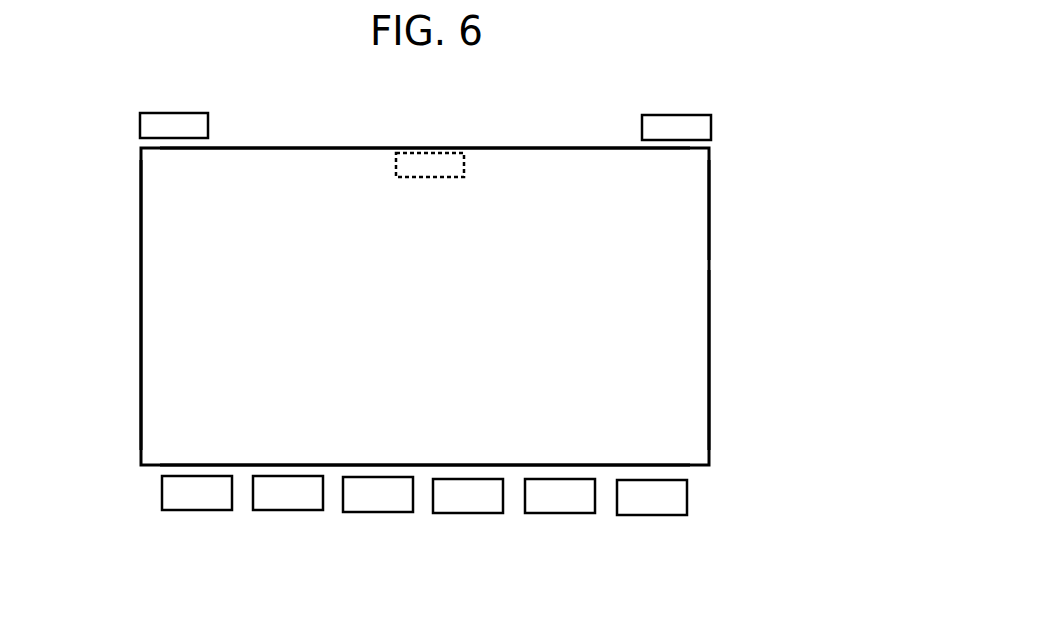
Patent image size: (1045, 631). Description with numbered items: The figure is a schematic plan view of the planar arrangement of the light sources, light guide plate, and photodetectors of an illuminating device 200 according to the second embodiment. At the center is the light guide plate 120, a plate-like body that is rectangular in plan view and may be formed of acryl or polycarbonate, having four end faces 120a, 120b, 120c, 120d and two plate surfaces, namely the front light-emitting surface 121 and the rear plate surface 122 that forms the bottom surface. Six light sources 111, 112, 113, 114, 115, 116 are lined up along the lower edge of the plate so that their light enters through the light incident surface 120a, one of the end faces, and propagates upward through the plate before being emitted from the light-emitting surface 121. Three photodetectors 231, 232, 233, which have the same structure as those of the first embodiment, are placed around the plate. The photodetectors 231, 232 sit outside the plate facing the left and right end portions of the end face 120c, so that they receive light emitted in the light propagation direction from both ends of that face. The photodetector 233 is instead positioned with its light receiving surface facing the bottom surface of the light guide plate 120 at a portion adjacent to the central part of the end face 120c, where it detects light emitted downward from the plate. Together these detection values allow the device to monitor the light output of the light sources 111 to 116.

The illuminating device 200 is at (318, 73).
The light guide plate 120 is at (697, 400).
The light incident surface 120a is at (336, 462).
The end face 120b is at (140, 306).
The end face 120c is at (458, 148).
The end face 120d is at (710, 311).
The light-emitting surface 121 is at (440, 317).
The plate surface 122 is at (700, 213).
The light source 111 is at (192, 511).
The light source 112 is at (284, 511).
The light source 113 is at (375, 513).
The light source 114 is at (467, 514).
The light source 115 is at (557, 514).
The light source 116 is at (649, 516).
The photodetector 231 is at (208, 126).
The photodetector 232 is at (711, 127).
The photodetector 233 is at (448, 178).